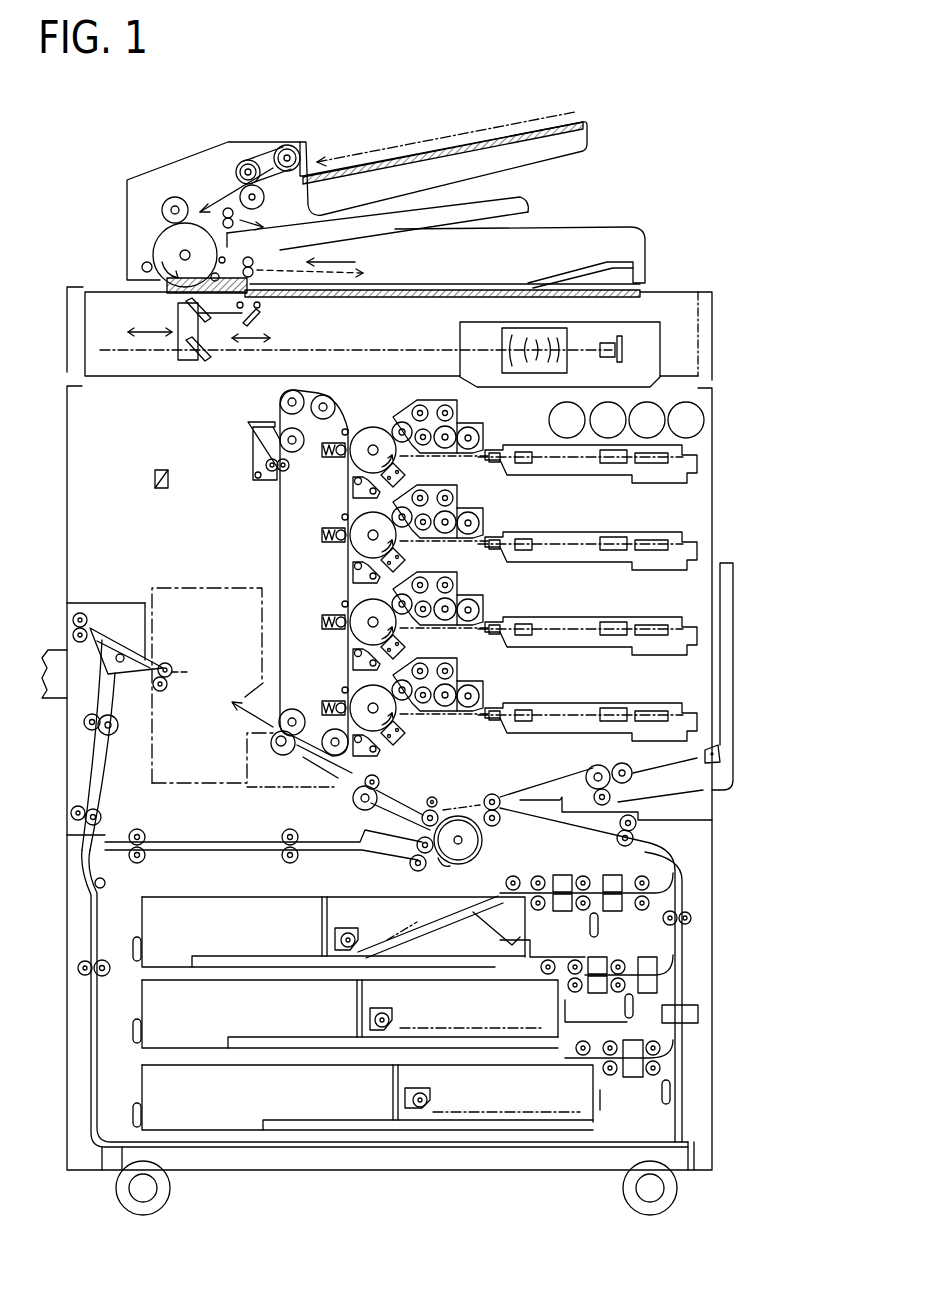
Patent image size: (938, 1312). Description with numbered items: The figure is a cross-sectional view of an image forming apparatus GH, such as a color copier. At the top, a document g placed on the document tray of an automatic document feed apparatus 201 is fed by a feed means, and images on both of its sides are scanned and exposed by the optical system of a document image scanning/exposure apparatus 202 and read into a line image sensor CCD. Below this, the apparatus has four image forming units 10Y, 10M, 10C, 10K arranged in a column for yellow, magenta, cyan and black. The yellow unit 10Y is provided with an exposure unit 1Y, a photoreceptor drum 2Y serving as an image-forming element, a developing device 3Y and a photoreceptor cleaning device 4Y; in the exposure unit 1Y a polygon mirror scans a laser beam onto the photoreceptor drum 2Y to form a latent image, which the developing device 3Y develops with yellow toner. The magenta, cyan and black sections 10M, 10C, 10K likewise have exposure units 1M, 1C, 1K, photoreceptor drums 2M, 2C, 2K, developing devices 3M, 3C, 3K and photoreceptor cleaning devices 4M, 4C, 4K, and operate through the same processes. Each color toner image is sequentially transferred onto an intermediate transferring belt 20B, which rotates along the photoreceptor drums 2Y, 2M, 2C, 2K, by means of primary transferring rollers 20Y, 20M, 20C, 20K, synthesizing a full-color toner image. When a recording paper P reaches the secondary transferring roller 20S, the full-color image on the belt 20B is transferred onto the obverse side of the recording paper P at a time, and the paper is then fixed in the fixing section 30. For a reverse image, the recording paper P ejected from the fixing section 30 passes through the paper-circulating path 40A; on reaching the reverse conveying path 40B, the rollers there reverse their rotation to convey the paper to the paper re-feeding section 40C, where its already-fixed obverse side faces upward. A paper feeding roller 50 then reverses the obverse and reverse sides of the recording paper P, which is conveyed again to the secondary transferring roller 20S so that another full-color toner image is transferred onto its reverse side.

The image forming apparatus GH is at (147, 160).
The document g is at (500, 128).
The automatic document feed apparatus 201 is at (590, 219).
The document image scanning/exposure apparatus 202 is at (417, 305).
The line image sensor CCD is at (625, 345).
The photoreceptor drum 2Y is at (373, 426).
The photoreceptor drum 2M is at (360, 512).
The photoreceptor drum 2C is at (360, 598).
The photoreceptor drum 2K is at (360, 684).
The developing device 3Y is at (436, 408).
The developing device 3M is at (437, 497).
The developing device 3C is at (437, 584).
The developing device 3K is at (437, 668).
The photoreceptor cleaning device 4Y is at (347, 472).
The photoreceptor cleaning device 4M is at (347, 558).
The photoreceptor cleaning device 4C is at (347, 645).
The photoreceptor cleaning device 4K is at (376, 766).
The primary transferring roller 20Y is at (337, 435).
The primary transferring roller 20M is at (327, 527).
The primary transferring roller 20C is at (327, 615).
The primary transferring roller 20K is at (327, 700).
The image forming unit 10Y is at (587, 452).
The image forming section 10M is at (587, 542).
The image forming section 10C is at (587, 625).
The image forming section 10K is at (587, 709).
The exposure unit 1Y is at (607, 478).
The exposure unit 1M is at (607, 565).
The exposure unit 1C is at (607, 650).
The exposure unit 1K is at (604, 735).
The intermediate transferring belt 20B is at (278, 572).
The secondary transferring roller 20S is at (270, 753).
The fixing section 30 is at (170, 590).
The paper feeding roller 50 is at (443, 802).
The paper-circulating path 40A is at (115, 773).
The reverse conveying path 40B is at (90, 937).
The paper re-feeding section 40C is at (233, 838).
The recording paper P is at (437, 915).